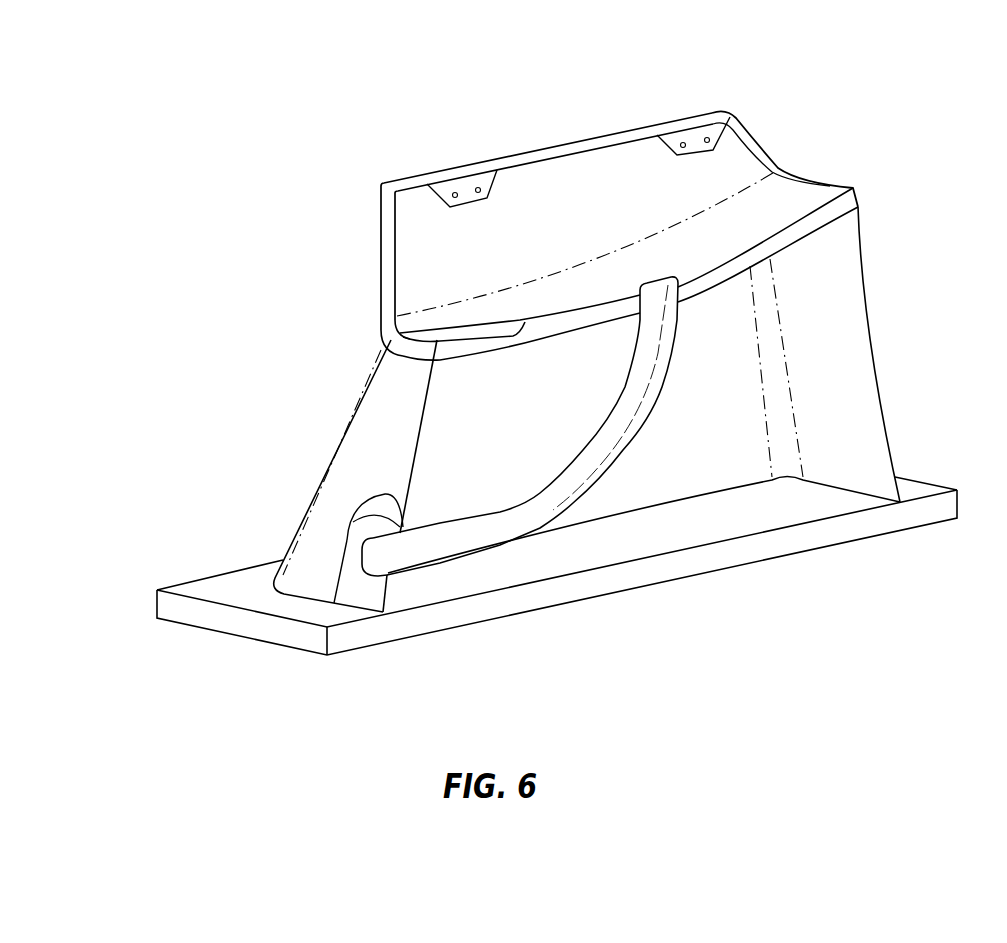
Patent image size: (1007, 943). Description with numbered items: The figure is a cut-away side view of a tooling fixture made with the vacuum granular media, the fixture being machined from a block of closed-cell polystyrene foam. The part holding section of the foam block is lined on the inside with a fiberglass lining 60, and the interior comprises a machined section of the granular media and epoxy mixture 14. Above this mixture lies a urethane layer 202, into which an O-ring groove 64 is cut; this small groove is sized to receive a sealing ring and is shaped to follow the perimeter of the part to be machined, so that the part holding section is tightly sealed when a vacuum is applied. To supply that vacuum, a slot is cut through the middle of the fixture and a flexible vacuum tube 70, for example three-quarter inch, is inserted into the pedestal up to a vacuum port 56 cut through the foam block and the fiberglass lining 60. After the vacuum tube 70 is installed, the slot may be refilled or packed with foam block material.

The granular media and epoxy mixture 14 is at (611, 243).
The vacuum port 56 is at (395, 556).
The fiberglass lining 60 is at (433, 172).
The O-ring groove 64 is at (763, 152).
The vacuum tube 70 is at (613, 483).
The urethane layer 202 is at (567, 143).